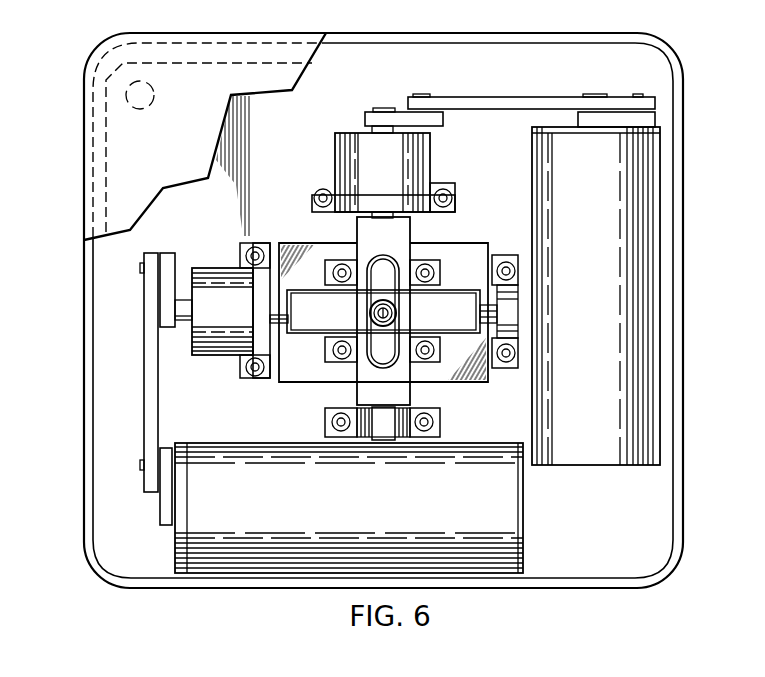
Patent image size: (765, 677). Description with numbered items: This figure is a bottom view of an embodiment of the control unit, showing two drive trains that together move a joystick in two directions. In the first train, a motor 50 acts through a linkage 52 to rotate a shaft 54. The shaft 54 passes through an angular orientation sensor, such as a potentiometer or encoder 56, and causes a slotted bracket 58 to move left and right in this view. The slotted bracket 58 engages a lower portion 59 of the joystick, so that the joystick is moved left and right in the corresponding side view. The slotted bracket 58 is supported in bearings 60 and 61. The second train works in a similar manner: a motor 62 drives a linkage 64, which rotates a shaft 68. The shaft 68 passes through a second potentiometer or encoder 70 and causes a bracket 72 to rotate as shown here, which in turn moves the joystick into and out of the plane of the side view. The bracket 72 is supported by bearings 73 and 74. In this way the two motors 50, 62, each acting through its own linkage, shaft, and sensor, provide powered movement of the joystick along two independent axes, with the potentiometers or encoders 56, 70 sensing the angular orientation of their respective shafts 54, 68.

The motor 50 is at (571, 189).
The linkage 52 is at (512, 82).
The shaft 54 is at (390, 110).
The potentiometer or encoder 56 is at (364, 175).
The slotted bracket 58 is at (400, 242).
The lower portion of the joystick 59 is at (369, 308).
The bearing 60 is at (328, 422).
The bearing 61 is at (453, 193).
The motor 62 is at (317, 513).
The linkage 64 is at (125, 396).
The shaft 68 is at (184, 305).
The potentiometer or encoder 70 is at (209, 322).
The bracket 72 is at (296, 243).
The bearing 73 is at (245, 380).
The bearing 74 is at (515, 373).